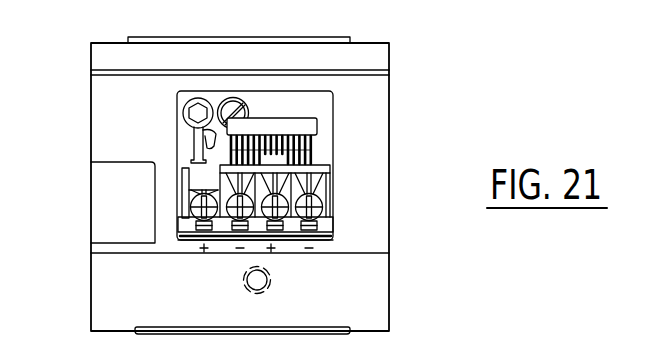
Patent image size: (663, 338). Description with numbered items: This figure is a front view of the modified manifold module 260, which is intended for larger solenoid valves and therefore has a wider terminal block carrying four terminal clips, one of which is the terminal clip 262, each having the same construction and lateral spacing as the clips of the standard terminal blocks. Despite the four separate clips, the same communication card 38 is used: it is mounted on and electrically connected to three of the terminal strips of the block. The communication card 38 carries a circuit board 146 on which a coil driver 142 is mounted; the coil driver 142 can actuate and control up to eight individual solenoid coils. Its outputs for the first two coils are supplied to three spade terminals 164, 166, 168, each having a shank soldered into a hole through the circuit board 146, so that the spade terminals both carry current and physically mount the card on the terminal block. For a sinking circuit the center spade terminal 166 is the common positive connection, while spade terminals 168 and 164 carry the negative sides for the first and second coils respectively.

The manifold module 260 is at (91, 104).
The coil driver 142 is at (307, 120).
The spade terminal 164 is at (232, 180).
The communication card 38 is at (320, 138).
The circuit board 146 is at (312, 168).
The spade terminal 166 is at (300, 183).
The spade terminal 168 is at (317, 193).
The terminal clip 262 is at (337, 238).